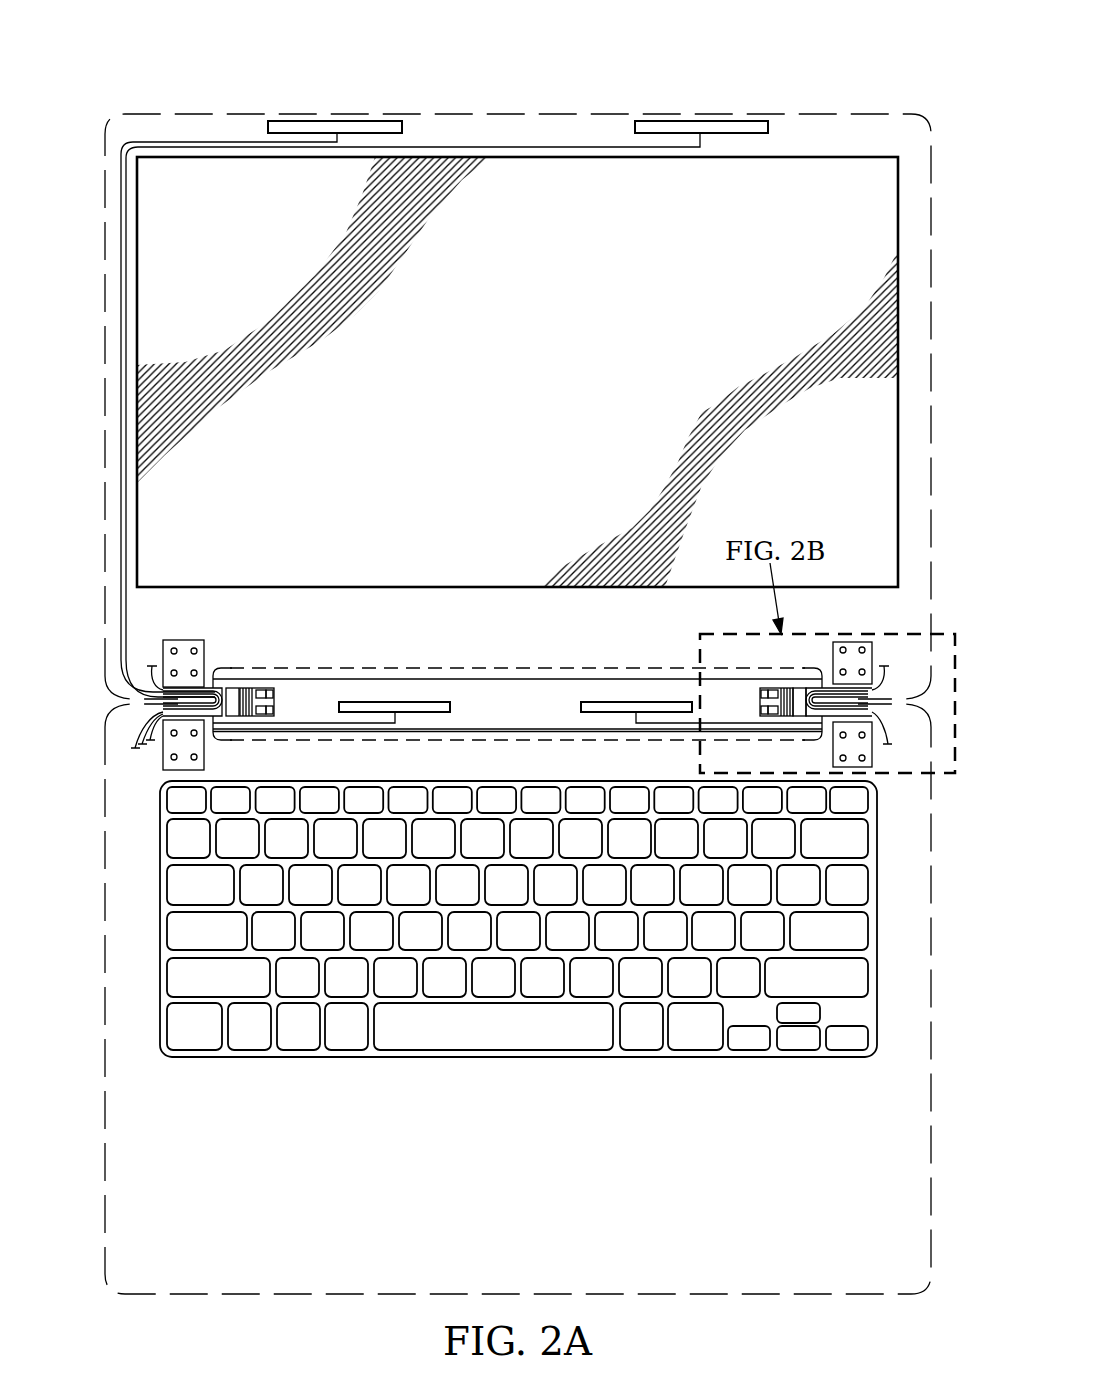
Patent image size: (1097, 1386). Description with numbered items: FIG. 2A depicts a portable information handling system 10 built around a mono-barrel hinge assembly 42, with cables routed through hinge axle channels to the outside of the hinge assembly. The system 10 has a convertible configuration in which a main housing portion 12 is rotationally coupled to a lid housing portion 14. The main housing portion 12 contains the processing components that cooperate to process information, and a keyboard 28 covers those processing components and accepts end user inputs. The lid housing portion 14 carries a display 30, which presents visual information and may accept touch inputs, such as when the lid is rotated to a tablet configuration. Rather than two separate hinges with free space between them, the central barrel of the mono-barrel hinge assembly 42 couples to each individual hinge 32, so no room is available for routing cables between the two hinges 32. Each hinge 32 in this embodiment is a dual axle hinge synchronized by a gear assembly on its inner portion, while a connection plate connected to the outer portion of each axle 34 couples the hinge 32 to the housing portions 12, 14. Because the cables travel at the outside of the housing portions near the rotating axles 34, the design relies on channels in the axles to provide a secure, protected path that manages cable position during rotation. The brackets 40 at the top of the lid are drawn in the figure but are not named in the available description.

The portable information handling system 10 is at (812, 64).
The main housing portion 12 is at (105, 1001).
The lid housing portion 14 is at (105, 400).
The keyboard 28 is at (797, 1058).
The display 30 is at (531, 397).
The hinge 32 is at (523, 690).
The axle 34 is at (233, 688).
The hinge bracket 40 is at (298, 121).
The mono-barrel hinge assembly 42 is at (431, 610).